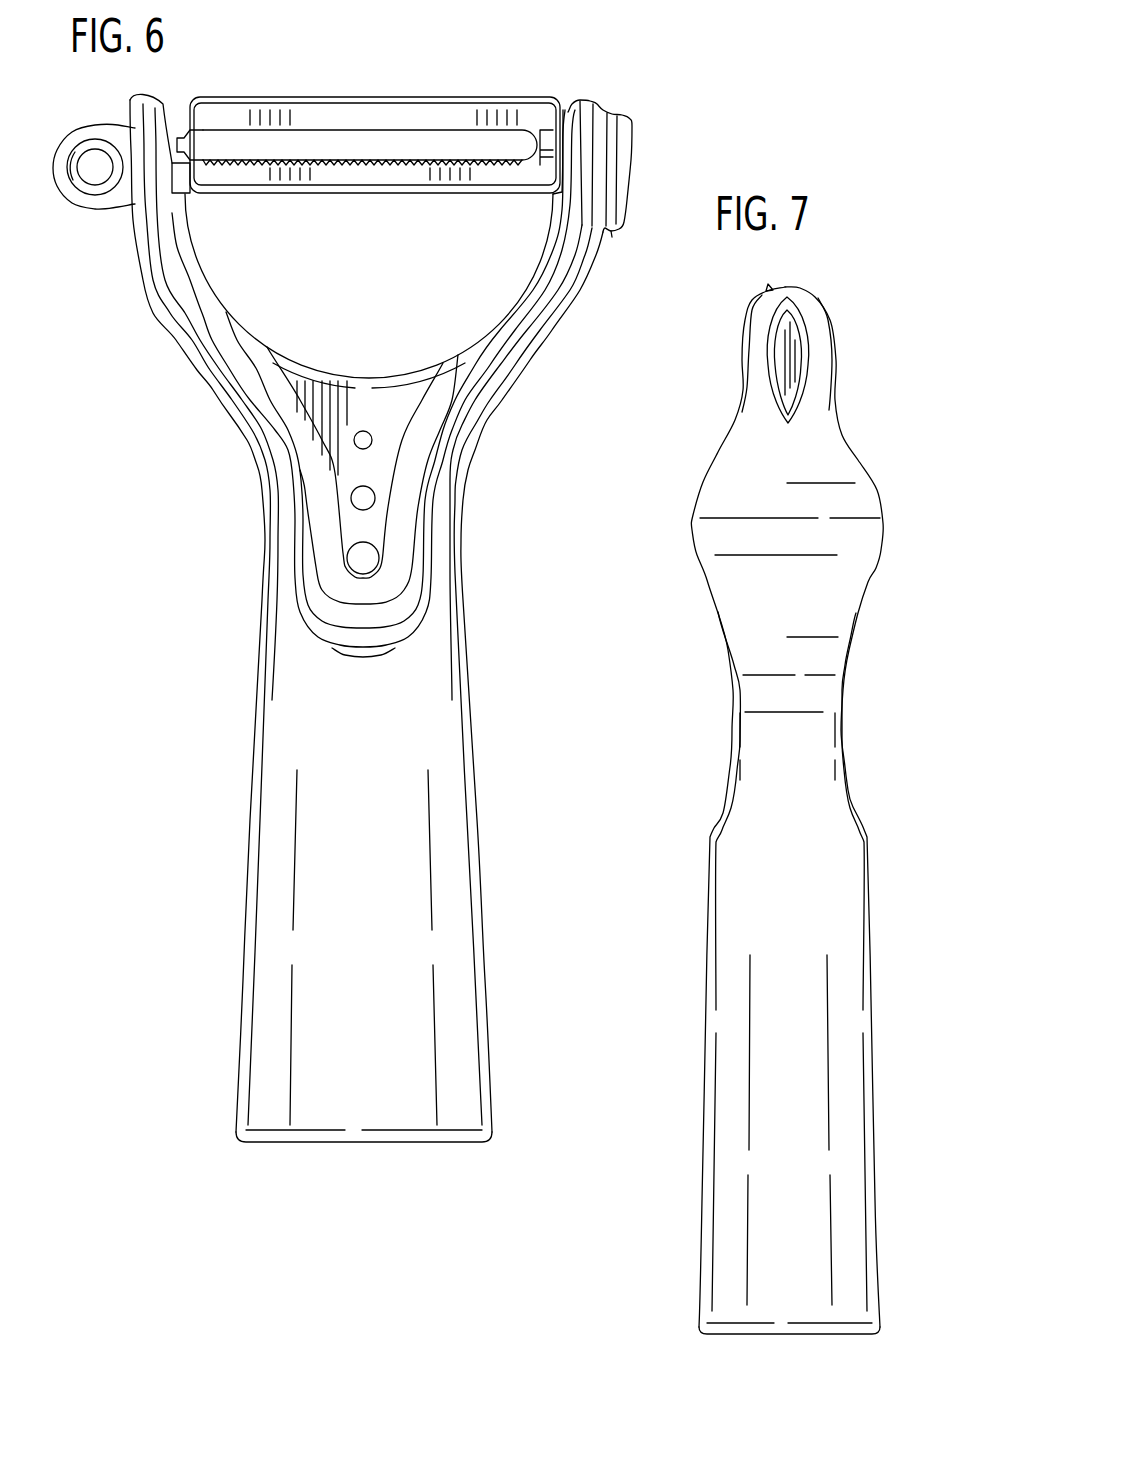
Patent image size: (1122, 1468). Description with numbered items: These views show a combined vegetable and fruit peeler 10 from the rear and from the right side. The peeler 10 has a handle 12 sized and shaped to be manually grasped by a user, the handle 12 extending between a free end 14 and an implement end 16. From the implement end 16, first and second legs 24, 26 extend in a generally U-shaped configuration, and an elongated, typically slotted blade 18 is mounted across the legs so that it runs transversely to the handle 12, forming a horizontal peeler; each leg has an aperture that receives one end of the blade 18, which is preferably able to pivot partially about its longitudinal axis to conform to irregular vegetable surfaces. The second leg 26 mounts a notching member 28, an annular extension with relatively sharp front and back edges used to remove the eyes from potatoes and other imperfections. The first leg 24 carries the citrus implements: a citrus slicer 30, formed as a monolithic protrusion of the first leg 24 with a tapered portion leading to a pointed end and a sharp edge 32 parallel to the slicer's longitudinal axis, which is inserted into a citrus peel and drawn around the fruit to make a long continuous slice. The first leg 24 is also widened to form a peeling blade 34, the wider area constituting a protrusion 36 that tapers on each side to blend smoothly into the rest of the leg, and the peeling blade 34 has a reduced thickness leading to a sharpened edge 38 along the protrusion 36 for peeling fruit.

In FIG. 6, the peeler 10 is at (529, 71).
In FIG. 7, the peeler 10 is at (874, 290).
In FIG. 6, the handle 12 is at (280, 873).
In FIG. 7, the handle 12 is at (737, 990).
In FIG. 6, the free end 14 is at (318, 1165).
In FIG. 7, the free end 14 is at (766, 1355).
In FIG. 6, the implement end 16 is at (218, 553).
In FIG. 7, the implement end 16 is at (702, 780).
In FIG. 6, the blade 18 is at (365, 110).
In FIG. 6, the first leg 24 is at (572, 296).
In FIG. 7, the first leg 24 is at (815, 447).
In FIG. 6, the second leg 26 is at (150, 292).
In FIG. 6, the notching member 28 is at (100, 125).
In FIG. 6, the citrus slicer 30 is at (631, 136).
In FIG. 7, the citrus slicer 30 is at (796, 350).
In FIG. 6, the sharp edge 32 is at (601, 235).
In FIG. 7, the sharp edge 32 is at (806, 413).
In FIG. 7, the peeling blade 34 is at (741, 542).
In FIG. 6, the protrusion 36 is at (571, 305).
In FIG. 6, the sharpened edge 38 is at (527, 323).
In FIG. 7, the sharpened edge 38 is at (692, 523).